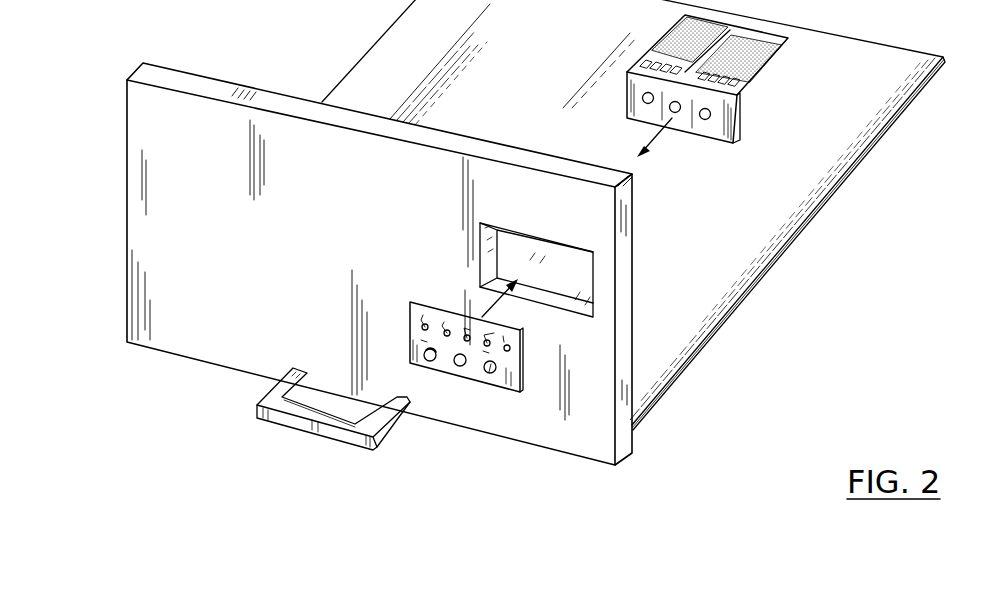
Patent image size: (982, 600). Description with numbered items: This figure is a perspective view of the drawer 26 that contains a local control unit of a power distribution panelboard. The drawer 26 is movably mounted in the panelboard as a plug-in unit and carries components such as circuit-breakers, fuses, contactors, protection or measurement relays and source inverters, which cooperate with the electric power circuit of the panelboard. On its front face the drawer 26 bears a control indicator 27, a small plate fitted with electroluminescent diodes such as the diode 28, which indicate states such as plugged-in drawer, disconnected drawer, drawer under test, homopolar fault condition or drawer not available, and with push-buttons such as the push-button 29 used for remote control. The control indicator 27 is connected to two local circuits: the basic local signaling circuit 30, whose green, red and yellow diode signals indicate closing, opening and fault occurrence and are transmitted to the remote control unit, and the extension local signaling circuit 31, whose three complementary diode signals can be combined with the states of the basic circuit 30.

The drawer 26 is at (597, 346).
The control indicator 27 is at (517, 377).
The electroluminescent diode 28 is at (422, 326).
The push-button 29 is at (430, 362).
The basic local signaling circuit 30 is at (701, 78).
The extension local signaling circuit 31 is at (745, 50).